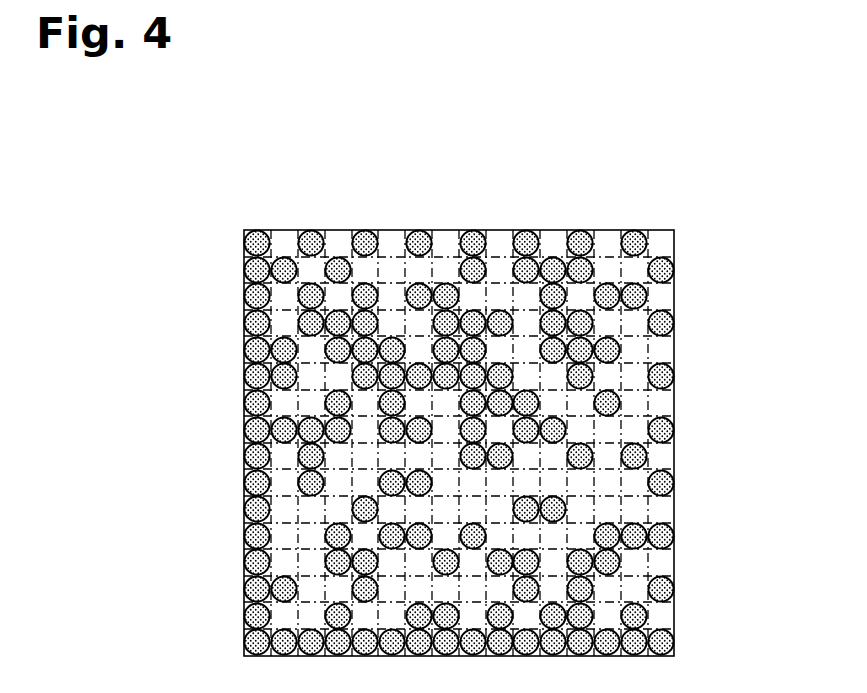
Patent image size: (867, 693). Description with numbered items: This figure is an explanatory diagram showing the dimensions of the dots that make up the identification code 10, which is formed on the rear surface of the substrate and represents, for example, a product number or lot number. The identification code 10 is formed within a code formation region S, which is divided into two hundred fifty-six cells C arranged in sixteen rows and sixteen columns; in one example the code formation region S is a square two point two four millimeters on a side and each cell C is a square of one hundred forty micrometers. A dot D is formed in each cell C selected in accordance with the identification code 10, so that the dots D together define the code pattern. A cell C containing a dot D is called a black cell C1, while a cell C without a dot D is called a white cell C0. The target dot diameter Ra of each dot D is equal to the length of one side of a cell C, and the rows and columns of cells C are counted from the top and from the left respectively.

The identification code 10 is at (774, 214).
The code formation region S is at (655, 230).
The cell C is at (557, 158).
The white cell C0 is at (447, 231).
The black cell C1 is at (583, 231).
The dot D is at (674, 323).
The target dot diameter Ra is at (287, 204).